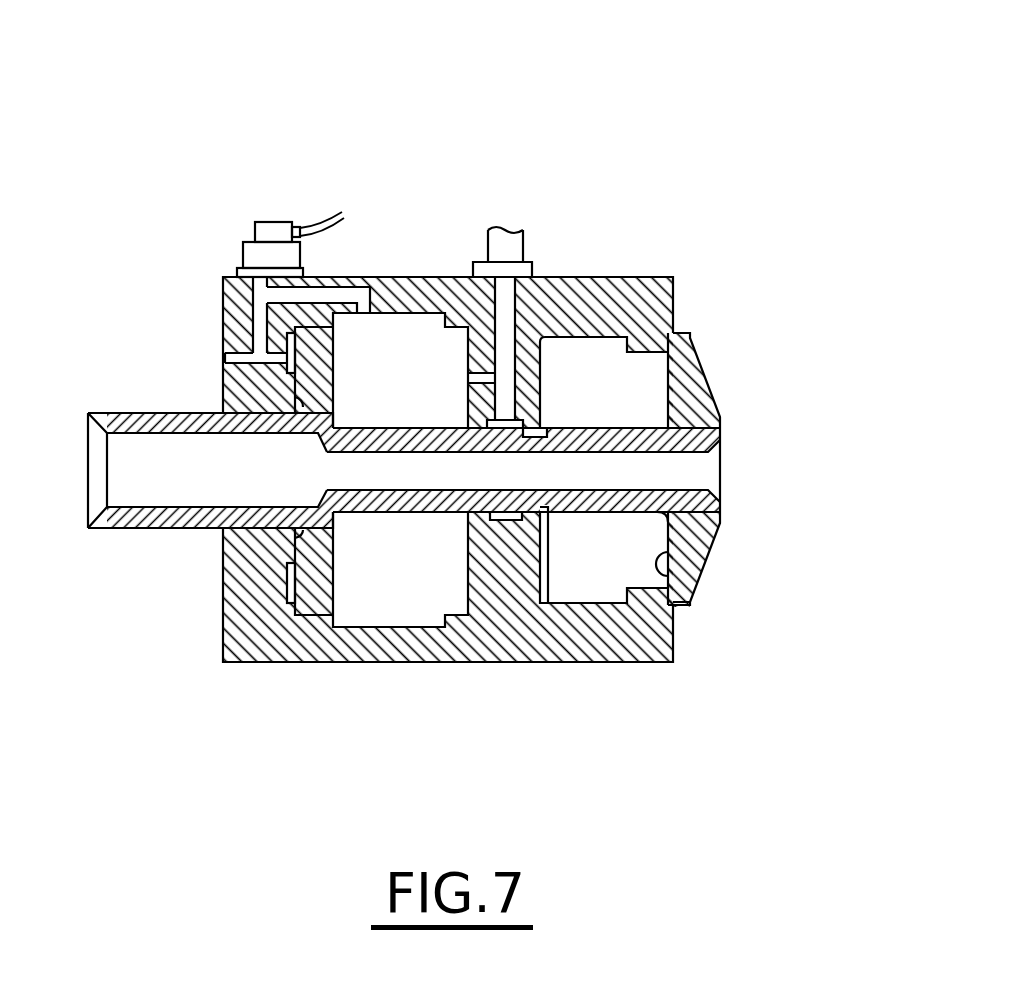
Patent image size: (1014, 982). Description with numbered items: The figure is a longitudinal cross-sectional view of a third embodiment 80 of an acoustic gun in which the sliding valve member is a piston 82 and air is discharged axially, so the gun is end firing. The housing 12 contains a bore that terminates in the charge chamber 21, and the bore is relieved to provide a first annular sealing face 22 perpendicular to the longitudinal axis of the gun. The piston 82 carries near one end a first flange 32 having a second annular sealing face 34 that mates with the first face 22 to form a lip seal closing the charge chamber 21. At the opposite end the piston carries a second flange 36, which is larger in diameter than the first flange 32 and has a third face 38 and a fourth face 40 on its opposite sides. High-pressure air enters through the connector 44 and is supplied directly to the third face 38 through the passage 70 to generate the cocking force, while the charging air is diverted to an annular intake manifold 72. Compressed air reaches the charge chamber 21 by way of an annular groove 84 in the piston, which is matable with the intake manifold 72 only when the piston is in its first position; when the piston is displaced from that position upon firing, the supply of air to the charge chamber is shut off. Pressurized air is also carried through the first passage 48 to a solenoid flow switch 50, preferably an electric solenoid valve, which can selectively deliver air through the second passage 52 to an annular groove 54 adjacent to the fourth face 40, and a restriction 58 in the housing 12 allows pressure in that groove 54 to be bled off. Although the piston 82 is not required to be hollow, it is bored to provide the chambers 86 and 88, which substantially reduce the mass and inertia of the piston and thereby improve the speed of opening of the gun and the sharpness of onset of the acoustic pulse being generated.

The acoustic gun embodiment 80 is at (229, 110).
The housing 12 is at (635, 297).
The charge chamber 21 is at (627, 405).
The first annular sealing face 22 is at (693, 601).
The first flange 32 is at (707, 528).
The second annular sealing face 34 is at (668, 577).
The second flange 36 is at (315, 595).
The third face 38 is at (358, 372).
The fourth face 40 is at (303, 587).
The connector 44 is at (507, 277).
The first passage 48 is at (320, 297).
The solenoid flow switch 50 is at (258, 257).
The second passage 52 is at (262, 320).
The annular groove 54 is at (293, 375).
The restriction 58 is at (223, 355).
The passage 70 is at (481, 380).
The annular intake manifold 72 is at (503, 517).
The piston 82 is at (590, 512).
The annular groove 84 is at (548, 508).
The chamber 86 is at (240, 483).
The chamber 88 is at (539, 483).